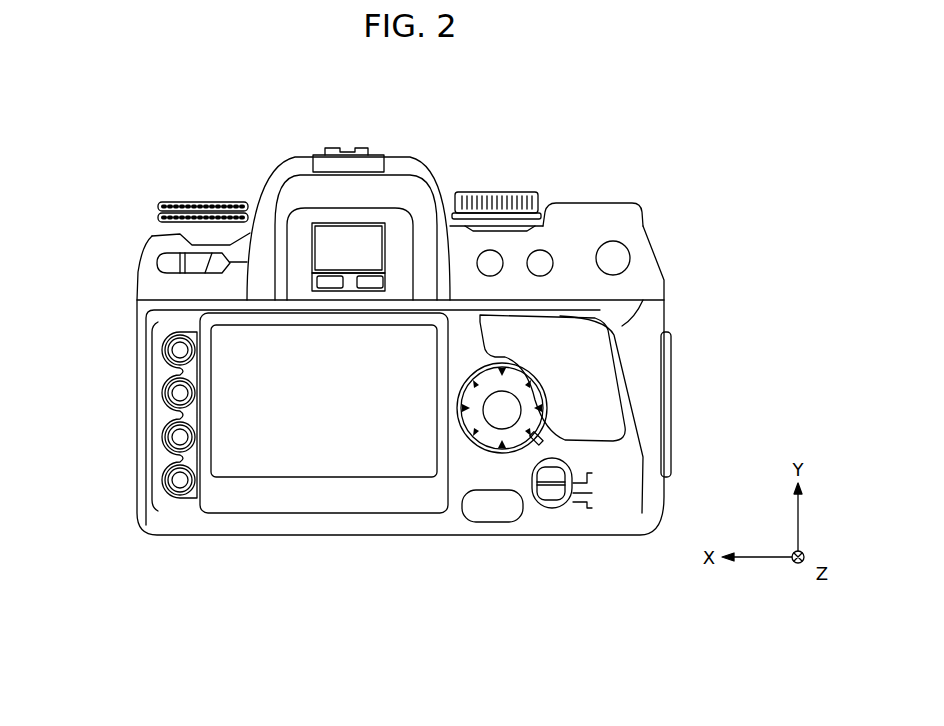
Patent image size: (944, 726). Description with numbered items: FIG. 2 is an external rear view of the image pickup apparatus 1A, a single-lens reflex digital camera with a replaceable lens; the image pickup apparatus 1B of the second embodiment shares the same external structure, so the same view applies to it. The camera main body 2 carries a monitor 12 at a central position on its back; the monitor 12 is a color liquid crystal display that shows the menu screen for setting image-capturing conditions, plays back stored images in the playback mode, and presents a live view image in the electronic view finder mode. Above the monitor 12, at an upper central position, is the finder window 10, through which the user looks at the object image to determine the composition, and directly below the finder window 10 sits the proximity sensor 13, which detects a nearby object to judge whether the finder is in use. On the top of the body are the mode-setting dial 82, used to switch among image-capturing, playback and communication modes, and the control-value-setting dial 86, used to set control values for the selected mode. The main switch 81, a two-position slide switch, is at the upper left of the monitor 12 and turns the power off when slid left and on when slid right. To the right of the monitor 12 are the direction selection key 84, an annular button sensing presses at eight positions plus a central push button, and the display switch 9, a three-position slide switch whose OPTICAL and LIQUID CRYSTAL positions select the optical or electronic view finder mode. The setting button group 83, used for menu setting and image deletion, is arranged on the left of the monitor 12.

The image pickup apparatus 1A is at (485, 99).
The image pickup apparatus 1B is at (521, 99).
The camera main body 2 is at (660, 311).
The display switch 9 is at (547, 492).
The finder window 10 is at (353, 240).
The monitor 12 is at (288, 453).
The proximity sensor 13 is at (358, 273).
The main switch 81 is at (157, 262).
The mode-setting dial 82 is at (497, 192).
The setting button group 83 is at (146, 396).
The direction selection key 84 is at (490, 452).
The control-value-setting dial 86 is at (208, 202).